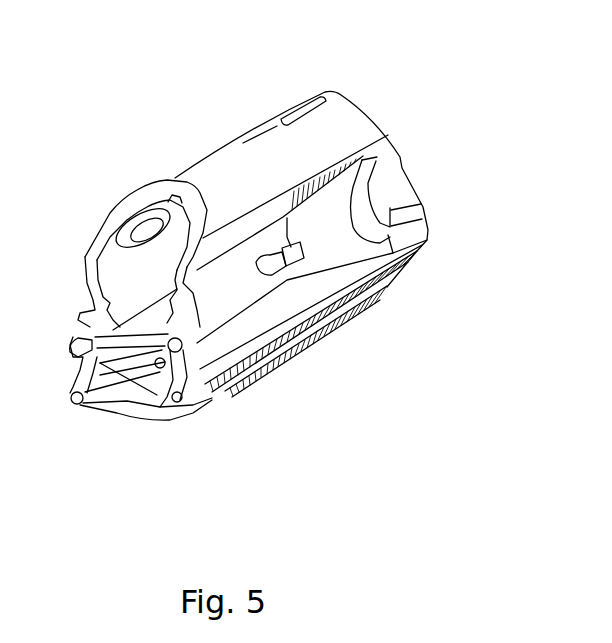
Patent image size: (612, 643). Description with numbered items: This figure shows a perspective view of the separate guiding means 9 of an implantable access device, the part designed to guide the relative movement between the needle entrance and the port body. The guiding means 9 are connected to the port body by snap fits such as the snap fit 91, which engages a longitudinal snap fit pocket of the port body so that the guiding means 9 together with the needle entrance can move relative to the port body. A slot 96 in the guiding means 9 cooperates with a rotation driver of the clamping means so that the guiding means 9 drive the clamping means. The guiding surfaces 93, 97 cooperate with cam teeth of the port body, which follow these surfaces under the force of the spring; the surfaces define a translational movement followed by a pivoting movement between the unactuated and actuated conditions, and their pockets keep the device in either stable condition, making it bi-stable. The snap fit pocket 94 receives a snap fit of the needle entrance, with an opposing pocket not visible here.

The guiding means 9 is at (177, 158).
The snap fit 91 is at (275, 258).
The guiding surface 93 is at (175, 345).
The snap fit pocket 94 is at (277, 125).
The slot 96 is at (390, 199).
The guiding surface 97 is at (82, 345).